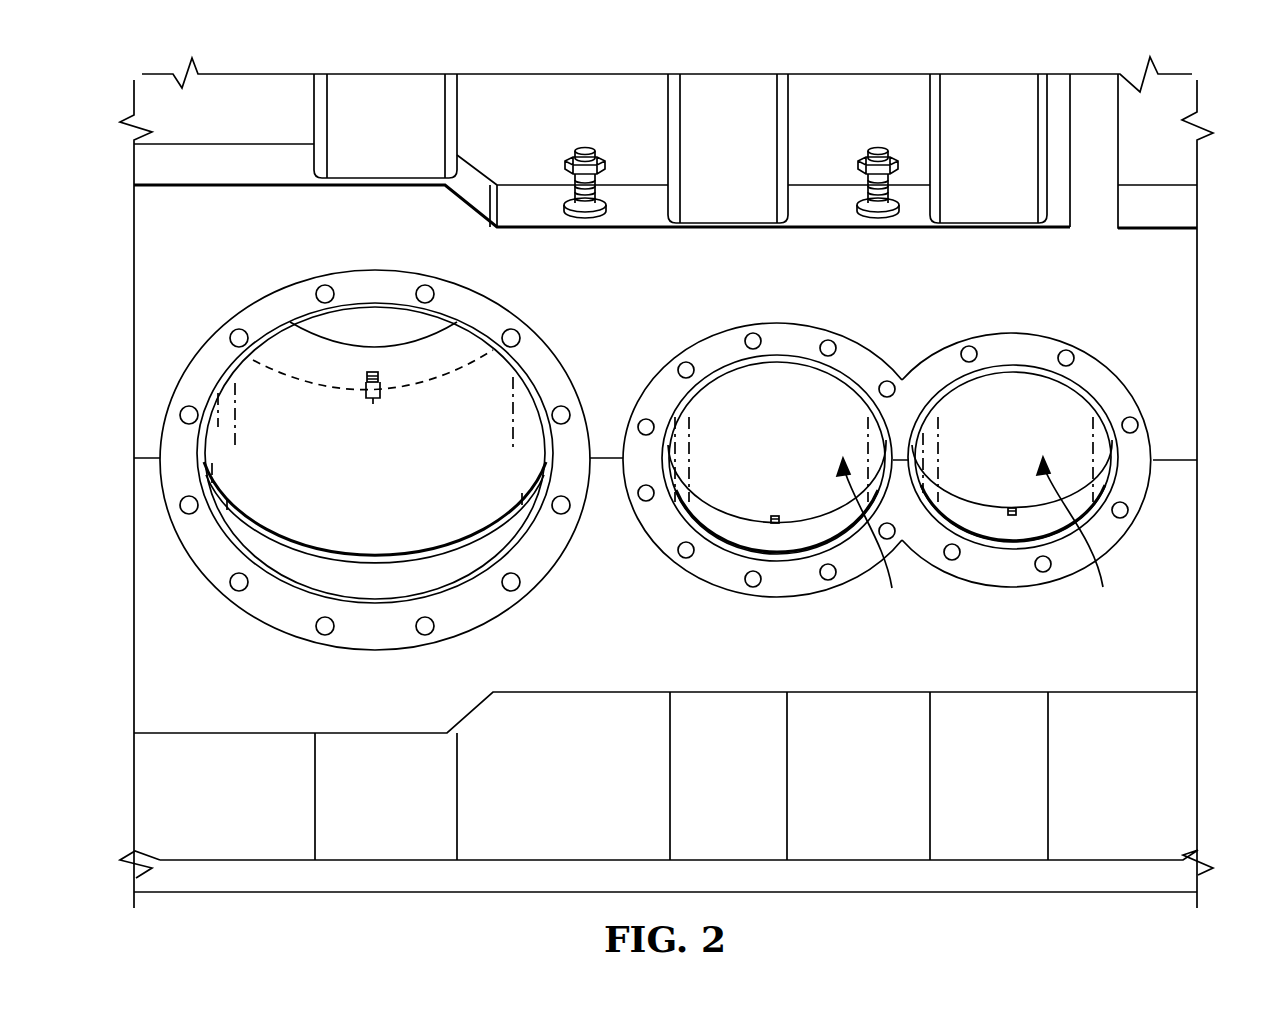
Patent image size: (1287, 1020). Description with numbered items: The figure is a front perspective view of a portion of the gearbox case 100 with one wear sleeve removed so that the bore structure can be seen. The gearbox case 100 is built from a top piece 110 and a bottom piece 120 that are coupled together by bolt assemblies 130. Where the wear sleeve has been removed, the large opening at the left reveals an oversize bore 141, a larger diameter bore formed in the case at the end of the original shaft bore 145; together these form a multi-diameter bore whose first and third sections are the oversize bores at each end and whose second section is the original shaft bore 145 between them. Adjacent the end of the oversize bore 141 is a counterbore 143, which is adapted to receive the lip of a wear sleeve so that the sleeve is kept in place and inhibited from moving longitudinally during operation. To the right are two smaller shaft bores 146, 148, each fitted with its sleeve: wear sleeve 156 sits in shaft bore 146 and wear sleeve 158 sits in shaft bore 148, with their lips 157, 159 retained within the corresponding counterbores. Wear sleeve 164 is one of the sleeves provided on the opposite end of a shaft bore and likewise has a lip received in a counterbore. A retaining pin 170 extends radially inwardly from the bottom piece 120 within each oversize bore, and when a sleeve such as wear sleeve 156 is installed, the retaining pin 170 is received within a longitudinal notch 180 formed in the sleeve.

The gearbox case 100 is at (701, 476).
The top piece 110 is at (257, 200).
The bottom piece 120 is at (601, 684).
The bolt assembly 130 is at (585, 148).
The oversize bore 141 is at (282, 548).
The counterbore 143 is at (368, 610).
The original shaft bore 145 is at (422, 517).
The shaft bore 146 is at (875, 540).
The shaft bore 148 is at (1082, 539).
The wear sleeve 156 is at (720, 523).
The lip 157 is at (837, 543).
The wear sleeve 158 is at (972, 523).
The lip 159 is at (1017, 548).
The wear sleeve 164 is at (317, 355).
The retaining pin 170 is at (373, 372).
The longitudinal notch 180 is at (373, 404).